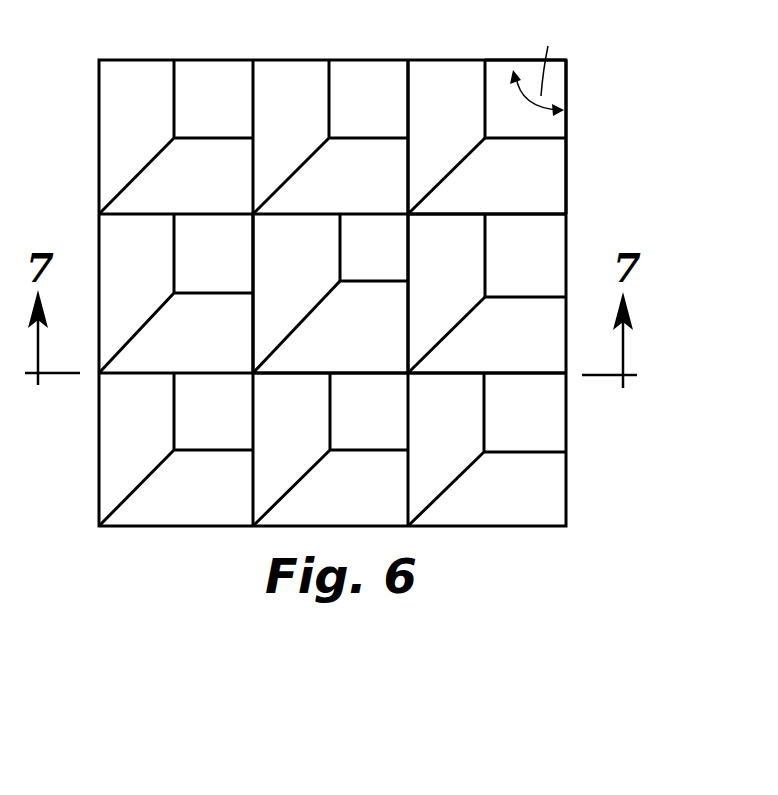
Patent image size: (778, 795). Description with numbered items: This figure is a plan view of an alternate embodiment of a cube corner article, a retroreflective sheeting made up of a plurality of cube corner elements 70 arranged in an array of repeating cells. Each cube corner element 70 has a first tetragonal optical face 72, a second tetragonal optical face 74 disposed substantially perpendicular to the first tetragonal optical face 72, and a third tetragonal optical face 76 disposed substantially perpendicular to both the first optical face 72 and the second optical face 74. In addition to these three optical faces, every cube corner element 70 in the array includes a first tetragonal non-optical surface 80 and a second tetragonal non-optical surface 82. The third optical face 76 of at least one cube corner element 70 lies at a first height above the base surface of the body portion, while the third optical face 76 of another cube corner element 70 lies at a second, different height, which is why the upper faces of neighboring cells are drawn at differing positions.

The cube corner element 70 is at (371, 269).
The first tetragonal optical face 72 is at (557, 60).
The second tetragonal optical face 74 is at (567, 123).
The third tetragonal optical face 76 is at (453, 178).
The first tetragonal non-optical surface 80 is at (369, 216).
The second tetragonal non-optical surface 82 is at (409, 272).